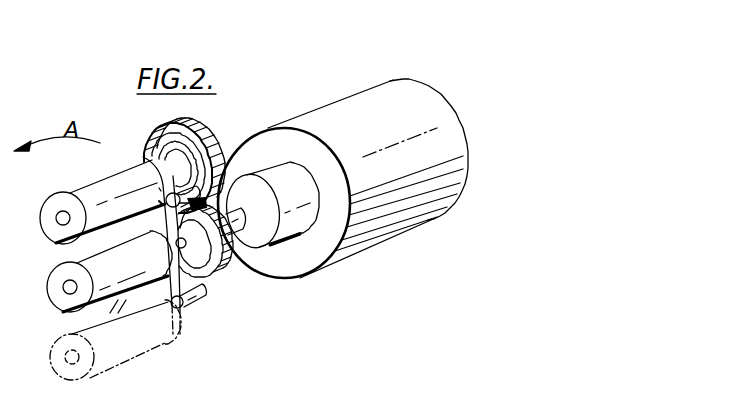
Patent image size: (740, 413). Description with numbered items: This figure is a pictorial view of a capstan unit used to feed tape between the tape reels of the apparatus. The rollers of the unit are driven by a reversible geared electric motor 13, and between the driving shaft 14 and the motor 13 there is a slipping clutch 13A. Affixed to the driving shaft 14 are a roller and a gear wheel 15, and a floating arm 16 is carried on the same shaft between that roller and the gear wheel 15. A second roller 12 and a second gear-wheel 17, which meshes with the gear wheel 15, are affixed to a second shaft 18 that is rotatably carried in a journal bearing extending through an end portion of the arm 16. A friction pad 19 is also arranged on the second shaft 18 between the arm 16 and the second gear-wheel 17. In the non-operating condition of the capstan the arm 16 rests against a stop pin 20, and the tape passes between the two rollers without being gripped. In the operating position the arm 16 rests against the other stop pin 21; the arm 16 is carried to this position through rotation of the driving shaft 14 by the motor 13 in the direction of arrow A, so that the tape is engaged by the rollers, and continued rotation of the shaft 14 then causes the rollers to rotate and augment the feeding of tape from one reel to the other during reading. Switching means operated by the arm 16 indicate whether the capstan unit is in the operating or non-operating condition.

The second roller 12 is at (97, 184).
The reversible geared electric motor 13 is at (326, 256).
The slipping clutch 13A is at (262, 174).
The driving shaft 14 is at (70, 290).
The gear wheel 15 is at (203, 283).
The floating arm 16 is at (216, 200).
The second gear-wheel 17 is at (206, 137).
The second shaft 18 is at (61, 216).
The friction pad 19 is at (166, 152).
The stop pin 20 is at (262, 172).
The stop pin 21 is at (183, 306).